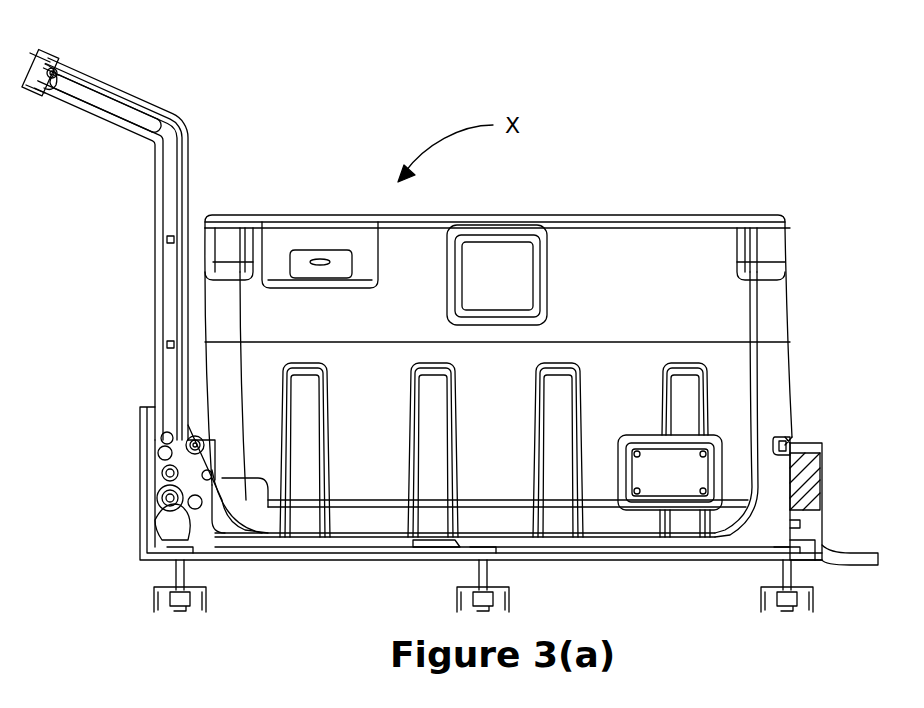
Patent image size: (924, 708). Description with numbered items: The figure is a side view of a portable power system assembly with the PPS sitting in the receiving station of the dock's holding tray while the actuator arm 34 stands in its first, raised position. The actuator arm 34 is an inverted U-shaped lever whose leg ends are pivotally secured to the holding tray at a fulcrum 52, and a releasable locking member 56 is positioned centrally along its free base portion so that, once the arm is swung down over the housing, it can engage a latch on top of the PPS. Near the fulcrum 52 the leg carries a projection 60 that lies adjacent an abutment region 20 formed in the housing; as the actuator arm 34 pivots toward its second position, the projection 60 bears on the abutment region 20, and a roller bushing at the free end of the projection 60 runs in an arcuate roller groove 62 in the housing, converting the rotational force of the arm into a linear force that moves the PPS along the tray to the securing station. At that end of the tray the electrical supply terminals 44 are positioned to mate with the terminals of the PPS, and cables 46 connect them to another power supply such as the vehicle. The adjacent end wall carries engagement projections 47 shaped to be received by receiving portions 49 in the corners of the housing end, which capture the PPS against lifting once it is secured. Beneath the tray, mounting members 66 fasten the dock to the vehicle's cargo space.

The abutment region 20 is at (263, 498).
The actuator arm 34 is at (175, 165).
The electrical supply terminals 44 is at (822, 485).
The cables 46 is at (855, 556).
The engagement projection 47 is at (790, 447).
The receiving portion 49 is at (773, 440).
The fulcrum 52 is at (157, 490).
The releasable locking member 56 is at (57, 62).
The projection 60 is at (193, 445).
The arcuate roller groove 62 is at (218, 497).
The mounting member 66 is at (167, 573).